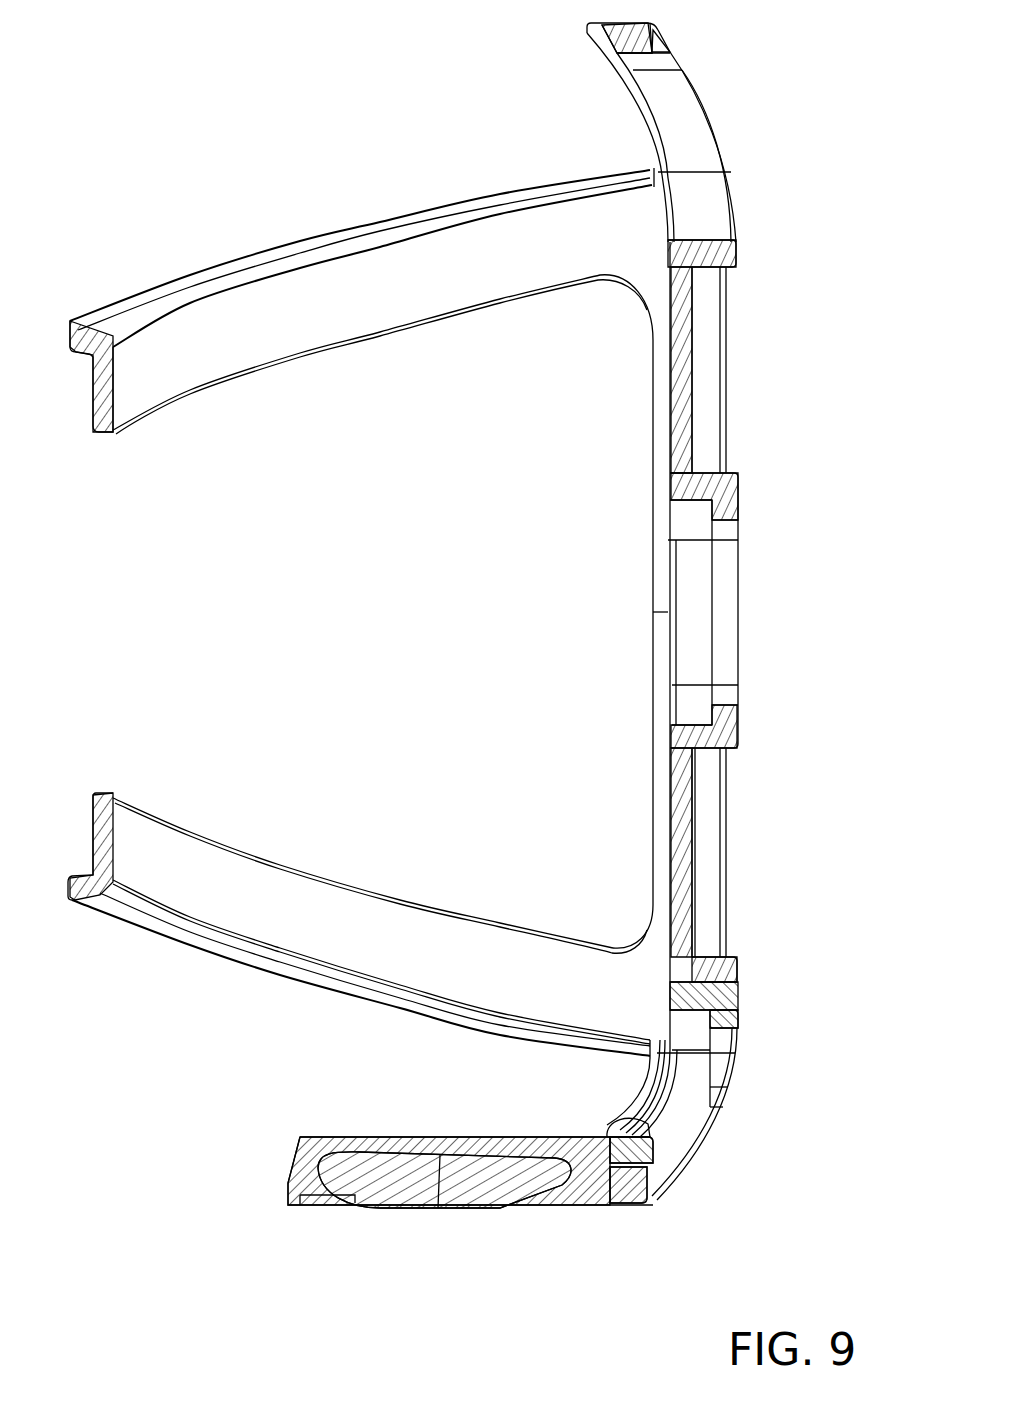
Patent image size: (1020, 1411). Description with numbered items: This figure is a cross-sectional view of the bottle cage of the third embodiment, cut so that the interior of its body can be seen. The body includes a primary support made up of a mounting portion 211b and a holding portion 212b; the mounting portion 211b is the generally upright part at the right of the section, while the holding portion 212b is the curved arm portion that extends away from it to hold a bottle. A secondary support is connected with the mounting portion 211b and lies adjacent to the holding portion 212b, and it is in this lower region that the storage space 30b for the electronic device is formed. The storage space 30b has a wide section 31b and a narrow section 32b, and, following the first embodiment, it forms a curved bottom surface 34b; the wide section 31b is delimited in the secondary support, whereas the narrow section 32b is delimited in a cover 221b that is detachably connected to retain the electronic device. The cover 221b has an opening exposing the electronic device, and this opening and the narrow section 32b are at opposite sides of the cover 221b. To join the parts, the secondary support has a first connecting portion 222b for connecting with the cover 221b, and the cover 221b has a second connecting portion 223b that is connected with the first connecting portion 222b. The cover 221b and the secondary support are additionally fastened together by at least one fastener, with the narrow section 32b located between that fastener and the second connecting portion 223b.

The holding portion 212b is at (379, 393).
The mounting portion 211b is at (688, 802).
The second connecting portion 223b is at (645, 1123).
The first connecting portion 222b is at (645, 1148).
The cover 221b is at (592, 1180).
The storage space 30b is at (500, 1186).
The wide section 31b is at (330, 1200).
The narrow section 32b is at (350, 1204).
The seam 34b is at (438, 1208).